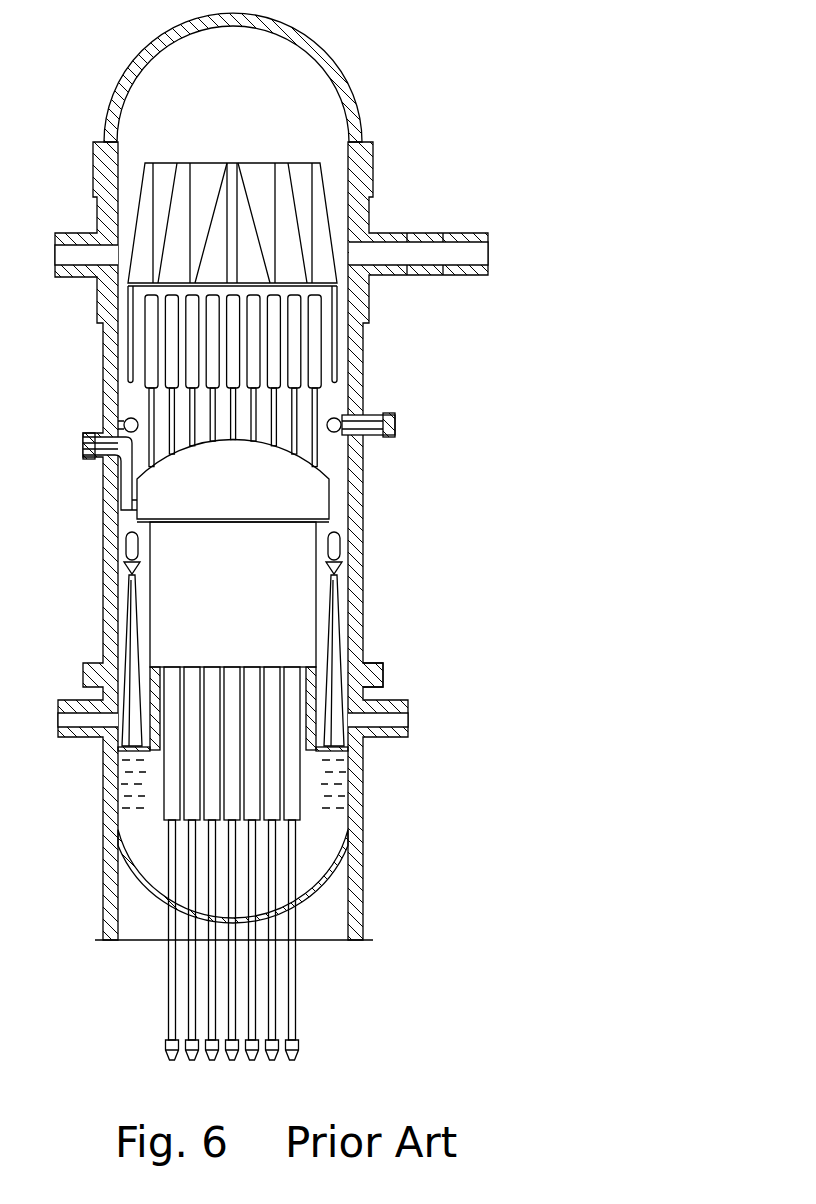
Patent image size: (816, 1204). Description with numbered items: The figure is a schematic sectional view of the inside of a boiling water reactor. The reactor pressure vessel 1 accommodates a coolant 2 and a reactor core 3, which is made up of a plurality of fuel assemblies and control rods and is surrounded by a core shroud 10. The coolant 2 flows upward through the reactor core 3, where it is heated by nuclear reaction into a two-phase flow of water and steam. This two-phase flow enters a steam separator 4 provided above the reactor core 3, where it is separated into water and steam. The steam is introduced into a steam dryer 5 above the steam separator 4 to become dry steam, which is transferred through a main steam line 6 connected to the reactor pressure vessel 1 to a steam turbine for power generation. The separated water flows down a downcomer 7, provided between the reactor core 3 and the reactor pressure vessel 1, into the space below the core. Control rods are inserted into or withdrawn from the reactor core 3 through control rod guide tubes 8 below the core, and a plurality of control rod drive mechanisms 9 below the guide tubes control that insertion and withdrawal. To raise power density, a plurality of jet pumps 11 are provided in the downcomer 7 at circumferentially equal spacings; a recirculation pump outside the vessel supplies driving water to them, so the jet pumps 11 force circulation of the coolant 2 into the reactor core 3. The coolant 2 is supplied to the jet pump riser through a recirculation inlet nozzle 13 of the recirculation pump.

The reactor pressure vessel 1 is at (365, 387).
The coolant 2 is at (116, 840).
The reactor core 3 is at (303, 537).
The steam separator 4 is at (321, 340).
The steam dryer 5 is at (319, 163).
The main steam line 6 is at (467, 252).
The downcomer 7 is at (120, 550).
The control rod guide tubes 8 is at (290, 787).
The control rod drive mechanisms 9 is at (165, 953).
The core shroud 10 is at (323, 677).
The jet pumps 11 is at (343, 594).
The recirculation inlet nozzle 13 is at (372, 683).